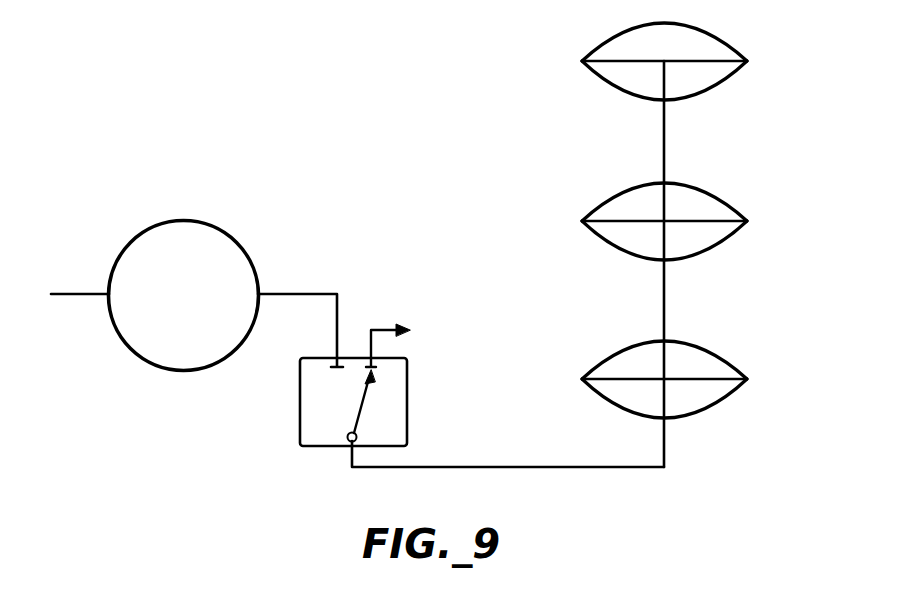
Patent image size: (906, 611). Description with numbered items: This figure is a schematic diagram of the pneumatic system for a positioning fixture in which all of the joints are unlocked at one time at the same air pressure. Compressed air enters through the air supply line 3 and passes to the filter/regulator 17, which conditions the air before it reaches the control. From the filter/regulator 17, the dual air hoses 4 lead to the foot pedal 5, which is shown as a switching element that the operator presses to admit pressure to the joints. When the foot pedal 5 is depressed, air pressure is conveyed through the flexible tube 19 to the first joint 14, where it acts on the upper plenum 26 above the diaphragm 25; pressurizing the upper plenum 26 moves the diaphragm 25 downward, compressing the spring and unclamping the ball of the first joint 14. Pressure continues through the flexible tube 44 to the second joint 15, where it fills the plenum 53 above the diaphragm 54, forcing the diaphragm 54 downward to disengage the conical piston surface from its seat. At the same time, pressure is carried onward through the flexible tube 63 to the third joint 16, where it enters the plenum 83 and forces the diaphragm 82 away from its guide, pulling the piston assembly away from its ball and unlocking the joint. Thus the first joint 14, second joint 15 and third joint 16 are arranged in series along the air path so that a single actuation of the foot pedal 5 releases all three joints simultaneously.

The air supply line 3 is at (85, 294).
The filter/regulator 17 is at (218, 228).
The dual air hoses 4 is at (287, 294).
The foot pedal 5 is at (300, 391).
The flexible tube 19 is at (560, 467).
The first joint 14 is at (664, 398).
The second joint 15 is at (663, 225).
The third joint 16 is at (663, 64).
The diaphragm 25 is at (609, 379).
The upper plenum 26 is at (700, 358).
The flexible tube 44 is at (660, 300).
The plenum 53 is at (700, 200).
The diaphragm 54 is at (609, 221).
The flexible tube 63 is at (660, 143).
The diaphragm 82 is at (609, 61).
The plenum 83 is at (700, 40).